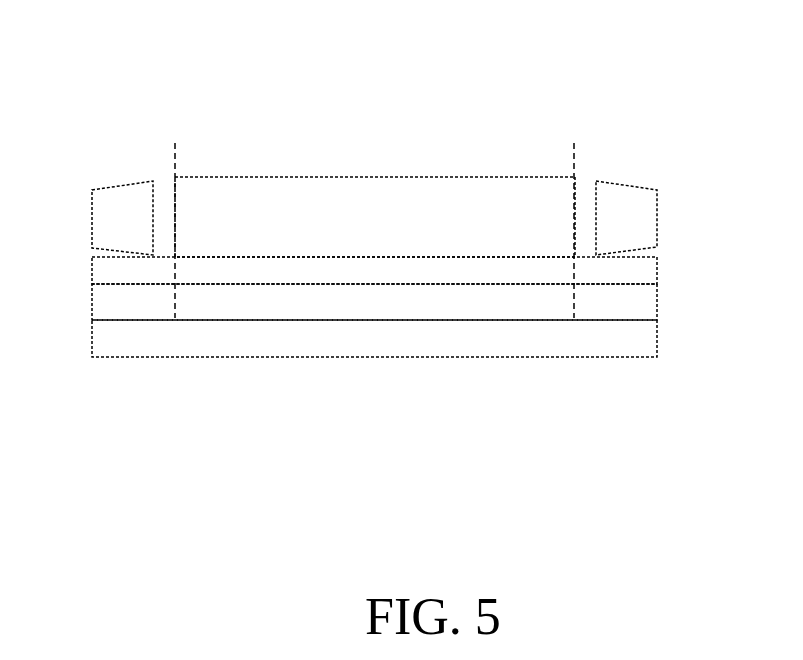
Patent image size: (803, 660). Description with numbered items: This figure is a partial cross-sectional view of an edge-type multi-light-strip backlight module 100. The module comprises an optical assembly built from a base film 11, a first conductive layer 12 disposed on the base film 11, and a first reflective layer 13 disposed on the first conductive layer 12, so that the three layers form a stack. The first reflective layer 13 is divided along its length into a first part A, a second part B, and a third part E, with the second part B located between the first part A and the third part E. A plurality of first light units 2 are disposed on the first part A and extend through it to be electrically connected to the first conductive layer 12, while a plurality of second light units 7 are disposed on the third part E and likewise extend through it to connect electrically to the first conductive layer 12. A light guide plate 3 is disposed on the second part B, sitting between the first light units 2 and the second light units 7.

The optoelectronic device 100 is at (382, 194).
The first light units 2 is at (92, 220).
The light guide plate 3 is at (370, 177).
The second light units 7 is at (658, 217).
The base film 11 is at (658, 343).
The first conductive layer 12 is at (658, 307).
The first reflective layer 13 is at (658, 270).